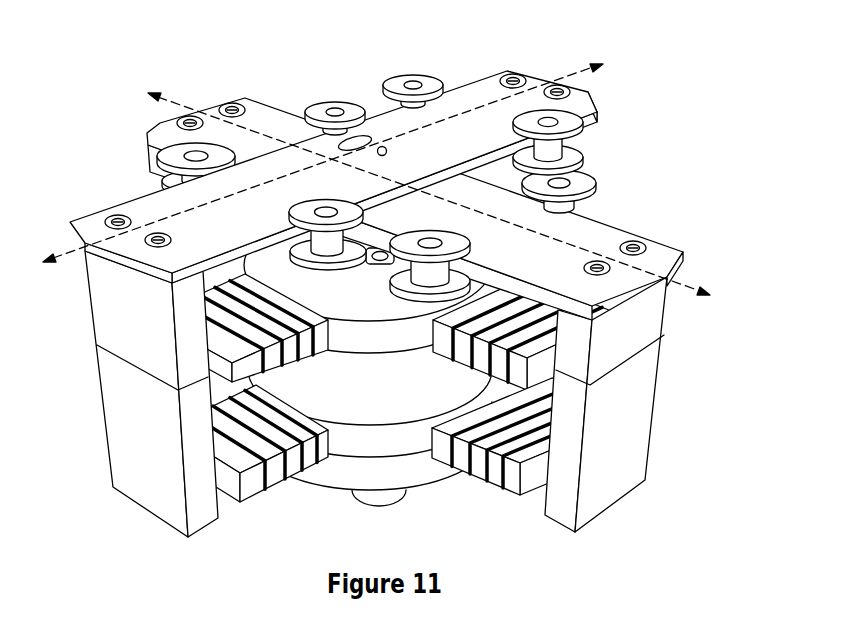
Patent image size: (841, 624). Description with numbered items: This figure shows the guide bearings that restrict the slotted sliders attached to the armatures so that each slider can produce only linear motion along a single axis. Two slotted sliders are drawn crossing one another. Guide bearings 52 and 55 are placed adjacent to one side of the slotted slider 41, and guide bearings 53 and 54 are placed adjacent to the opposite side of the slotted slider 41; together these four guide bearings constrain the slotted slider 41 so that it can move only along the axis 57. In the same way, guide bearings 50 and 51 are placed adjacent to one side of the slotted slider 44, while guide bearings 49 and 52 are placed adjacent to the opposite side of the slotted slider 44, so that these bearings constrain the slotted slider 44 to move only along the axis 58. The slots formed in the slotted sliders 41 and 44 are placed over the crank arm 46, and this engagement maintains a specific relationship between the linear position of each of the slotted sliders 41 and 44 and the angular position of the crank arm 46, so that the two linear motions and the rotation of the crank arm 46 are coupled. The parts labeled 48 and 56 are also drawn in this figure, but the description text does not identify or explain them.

The slotted slider 41 is at (603, 235).
The slotted slider 44 is at (482, 93).
The crank arm 46 is at (387, 152).
The pivot pin 48 is at (370, 500).
The guide bearing 49 is at (380, 80).
The guide bearing 50 is at (555, 157).
The guide bearing 51 is at (300, 206).
The guide bearing 52 is at (157, 155).
The guide bearing 53 is at (303, 100).
The guide bearing 54 is at (578, 188).
The guide bearing 55 is at (443, 283).
The slide block 56 is at (230, 142).
The axis 57 is at (140, 80).
The axis 58 is at (615, 77).